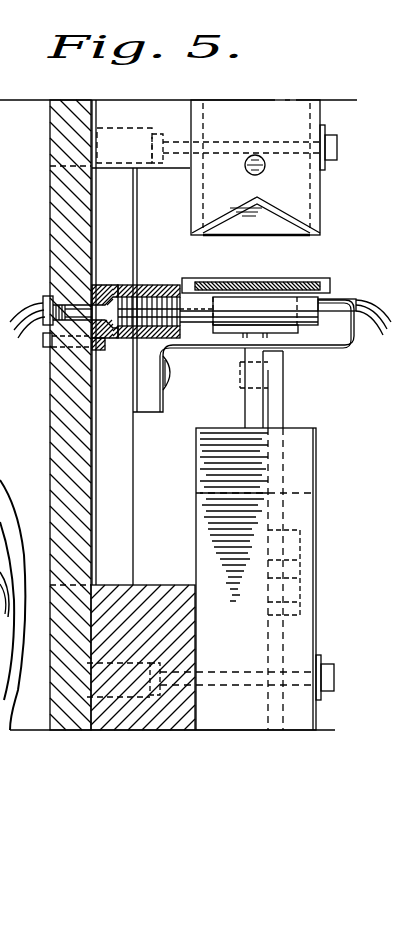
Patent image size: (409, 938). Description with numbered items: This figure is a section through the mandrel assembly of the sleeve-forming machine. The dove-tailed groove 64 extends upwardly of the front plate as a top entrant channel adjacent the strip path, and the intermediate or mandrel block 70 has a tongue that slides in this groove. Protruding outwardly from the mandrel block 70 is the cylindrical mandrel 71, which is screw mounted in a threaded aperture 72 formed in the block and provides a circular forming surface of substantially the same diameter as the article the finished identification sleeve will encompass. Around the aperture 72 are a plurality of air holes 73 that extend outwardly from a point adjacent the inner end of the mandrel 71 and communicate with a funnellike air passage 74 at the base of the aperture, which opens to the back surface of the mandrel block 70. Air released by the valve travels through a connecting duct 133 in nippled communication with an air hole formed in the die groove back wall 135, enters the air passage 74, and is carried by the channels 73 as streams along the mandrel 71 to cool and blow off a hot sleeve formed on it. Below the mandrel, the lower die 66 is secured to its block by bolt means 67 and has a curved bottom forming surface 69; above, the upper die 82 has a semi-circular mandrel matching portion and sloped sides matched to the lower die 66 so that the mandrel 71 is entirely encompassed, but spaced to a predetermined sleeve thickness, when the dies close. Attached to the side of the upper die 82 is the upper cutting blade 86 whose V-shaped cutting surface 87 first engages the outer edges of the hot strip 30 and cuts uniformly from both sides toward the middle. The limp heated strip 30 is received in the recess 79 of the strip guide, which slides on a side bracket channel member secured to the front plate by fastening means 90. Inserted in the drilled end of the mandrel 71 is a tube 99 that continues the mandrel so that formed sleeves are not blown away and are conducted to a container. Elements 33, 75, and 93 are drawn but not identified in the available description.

The strip 30 is at (300, 272).
The supply tube 33 is at (22, 307).
The dove-tailed groove 64 is at (113, 187).
The lower die 66 is at (300, 452).
The bolt means 67 is at (334, 677).
The curved bottom forming surface 69 is at (316, 493).
The mandrel block 70 is at (108, 297).
The mandrel 71 is at (249, 315).
The threaded aperture 72 is at (160, 288).
The air holes 73 is at (180, 332).
The funnellike air passage 74 is at (90, 300).
The stop block 75 is at (96, 343).
The recess 79 is at (330, 286).
The upper die 82 is at (265, 225).
The upper cutting blade 86 is at (298, 195).
The V-shaped cutting surface 87 is at (337, 143).
The fastening means 90 is at (176, 385).
The post 93 is at (283, 398).
The tube 99 is at (379, 332).
The connecting duct 133 is at (46, 338).
The die groove back wall 135 is at (73, 494).